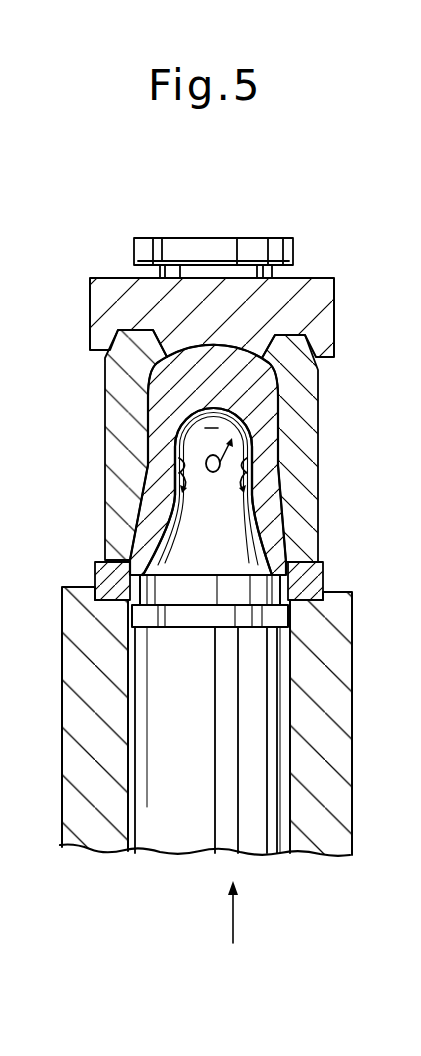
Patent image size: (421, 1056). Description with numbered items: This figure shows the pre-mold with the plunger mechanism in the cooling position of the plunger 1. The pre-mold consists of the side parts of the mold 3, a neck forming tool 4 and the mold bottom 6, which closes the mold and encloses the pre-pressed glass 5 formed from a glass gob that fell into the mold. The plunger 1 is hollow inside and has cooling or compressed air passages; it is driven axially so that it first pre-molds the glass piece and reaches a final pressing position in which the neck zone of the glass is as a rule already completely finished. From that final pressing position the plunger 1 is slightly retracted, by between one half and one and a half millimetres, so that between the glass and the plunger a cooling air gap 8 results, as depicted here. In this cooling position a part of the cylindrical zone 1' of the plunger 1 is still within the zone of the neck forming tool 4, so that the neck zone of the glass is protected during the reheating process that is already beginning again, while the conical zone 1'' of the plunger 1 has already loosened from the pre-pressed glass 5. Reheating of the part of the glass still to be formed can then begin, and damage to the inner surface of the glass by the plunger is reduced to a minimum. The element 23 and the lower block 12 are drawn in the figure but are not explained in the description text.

The mold bottom 6 is at (327, 310).
The pre-pressed glass 5 is at (232, 395).
The side parts of the mold 3 is at (295, 425).
The hole 23 is at (206, 463).
The cooling air gap 8 is at (253, 492).
The conical zone of the plunger 1'' is at (111, 489).
The plunger 1 is at (253, 630).
The neck forming tool 4 is at (323, 577).
The cylindrical zone of the plunger 1' is at (147, 616).
The support block 12 is at (327, 642).